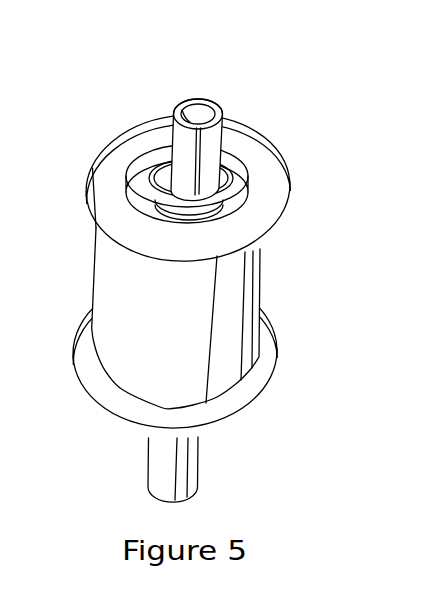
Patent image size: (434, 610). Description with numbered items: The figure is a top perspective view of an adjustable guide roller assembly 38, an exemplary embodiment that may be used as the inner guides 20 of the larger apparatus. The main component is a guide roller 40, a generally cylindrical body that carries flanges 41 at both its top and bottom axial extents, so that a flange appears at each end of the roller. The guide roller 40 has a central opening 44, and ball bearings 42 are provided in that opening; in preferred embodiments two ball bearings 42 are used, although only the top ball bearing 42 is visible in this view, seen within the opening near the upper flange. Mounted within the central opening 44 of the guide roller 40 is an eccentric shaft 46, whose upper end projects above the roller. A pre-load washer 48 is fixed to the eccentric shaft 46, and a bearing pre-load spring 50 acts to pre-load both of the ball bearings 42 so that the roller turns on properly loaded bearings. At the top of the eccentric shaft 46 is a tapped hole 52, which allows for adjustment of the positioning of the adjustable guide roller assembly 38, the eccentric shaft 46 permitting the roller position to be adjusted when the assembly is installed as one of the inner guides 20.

The inner guides 20 is at (218, 266).
The adjustable guide roller assembly 38 is at (218, 306).
The guide roller 40 is at (260, 265).
The flanges 41 is at (174, 387).
The ball bearings 42 is at (238, 207).
The central opening 44 is at (127, 178).
The eccentric shaft 46 is at (226, 122).
The pre-load washer 48 is at (145, 173).
The bearing pre-load spring 50 is at (167, 220).
The tapped hole 52 is at (197, 112).